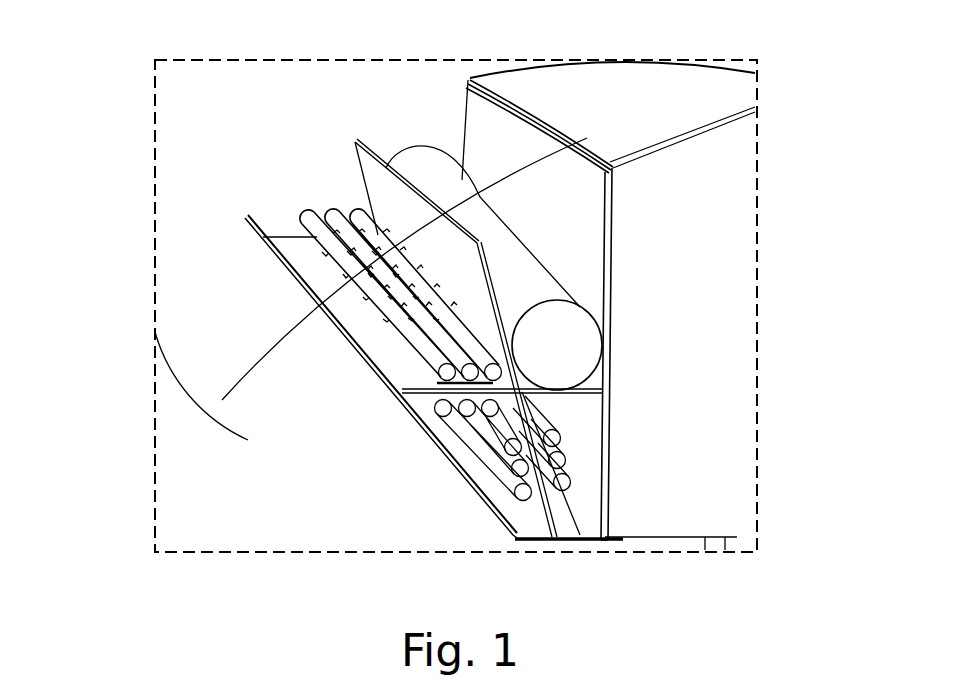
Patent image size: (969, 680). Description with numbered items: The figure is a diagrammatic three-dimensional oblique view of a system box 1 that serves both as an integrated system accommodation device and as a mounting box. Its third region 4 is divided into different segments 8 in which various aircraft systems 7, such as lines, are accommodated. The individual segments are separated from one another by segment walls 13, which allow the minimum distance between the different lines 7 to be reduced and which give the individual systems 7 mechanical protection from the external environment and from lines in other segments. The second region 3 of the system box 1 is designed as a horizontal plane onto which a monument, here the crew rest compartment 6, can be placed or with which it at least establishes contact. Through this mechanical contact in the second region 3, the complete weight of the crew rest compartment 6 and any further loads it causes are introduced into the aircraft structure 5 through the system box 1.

The system box 1 is at (353, 167).
The second region 3 is at (617, 210).
The third region 4 is at (578, 442).
The aircraft structure 5 is at (253, 378).
The crew rest compartment 6 is at (728, 192).
The aircraft systems 7 is at (542, 300).
The segments 8 is at (410, 140).
The segment walls 13 is at (395, 185).